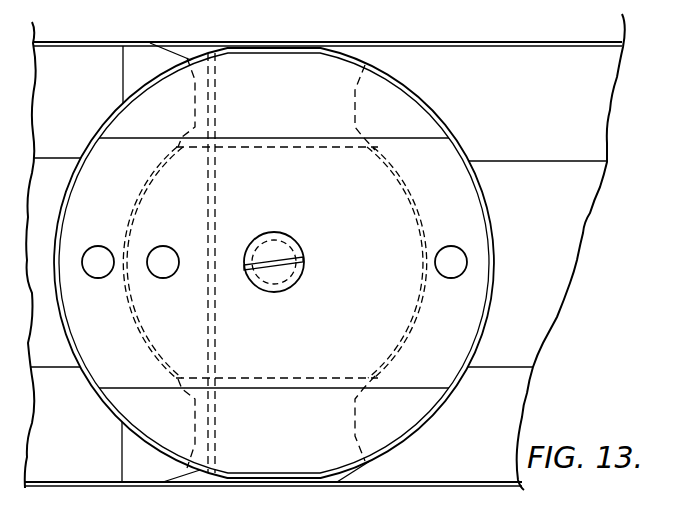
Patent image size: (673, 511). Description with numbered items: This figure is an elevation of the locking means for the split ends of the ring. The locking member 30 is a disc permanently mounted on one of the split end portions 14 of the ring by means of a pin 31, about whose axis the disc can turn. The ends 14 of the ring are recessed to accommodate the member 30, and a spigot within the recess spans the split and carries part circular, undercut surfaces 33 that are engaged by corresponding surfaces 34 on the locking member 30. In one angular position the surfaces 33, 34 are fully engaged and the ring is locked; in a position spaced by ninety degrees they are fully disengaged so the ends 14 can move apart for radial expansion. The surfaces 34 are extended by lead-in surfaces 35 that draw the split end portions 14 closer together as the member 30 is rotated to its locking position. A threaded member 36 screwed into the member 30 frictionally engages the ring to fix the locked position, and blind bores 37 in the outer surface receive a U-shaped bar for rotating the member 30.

The split end portions 14 is at (61, 359).
The locking member 30 is at (288, 64).
The pin 31 is at (278, 277).
The part circular peripherally and oppositely directed surfaces 33 is at (152, 176).
The corresponding surfaces 34 is at (143, 187).
The lead-in surfaces 35 is at (198, 106).
The threaded member 36 is at (163, 266).
The blind bores 37 is at (99, 268).